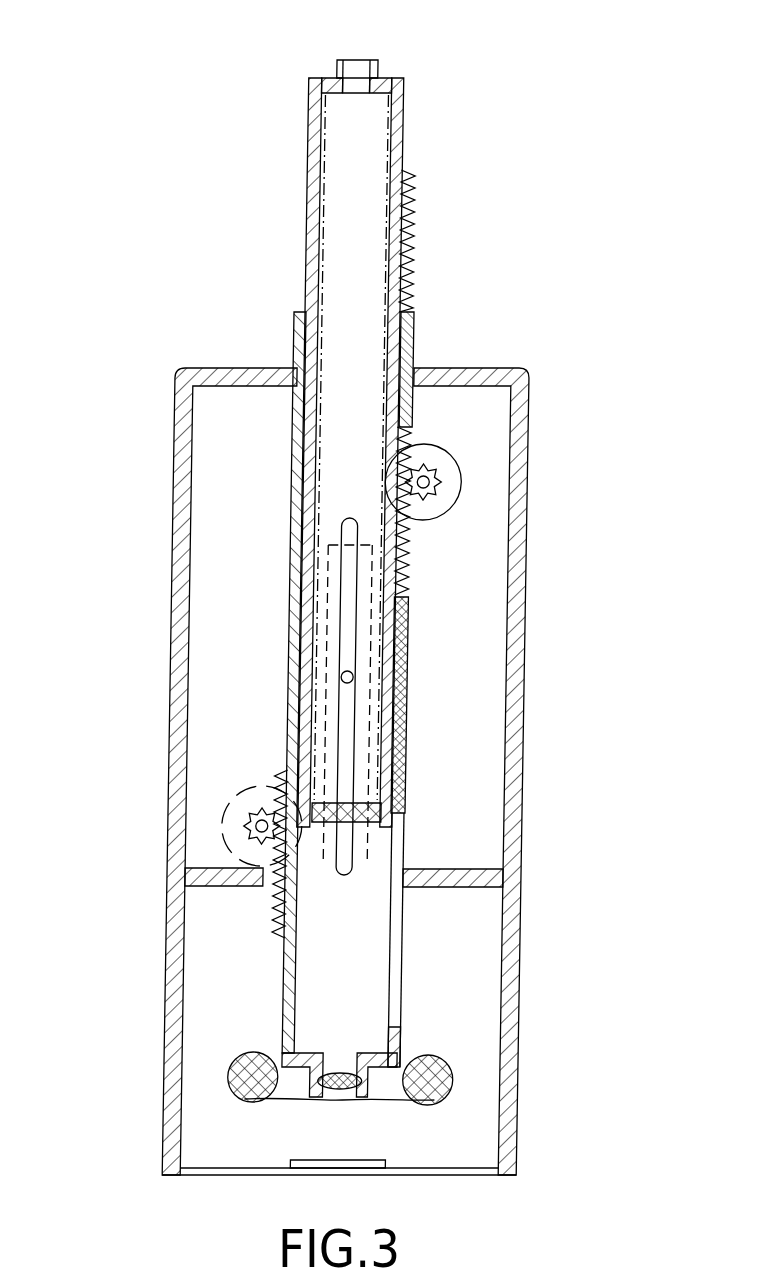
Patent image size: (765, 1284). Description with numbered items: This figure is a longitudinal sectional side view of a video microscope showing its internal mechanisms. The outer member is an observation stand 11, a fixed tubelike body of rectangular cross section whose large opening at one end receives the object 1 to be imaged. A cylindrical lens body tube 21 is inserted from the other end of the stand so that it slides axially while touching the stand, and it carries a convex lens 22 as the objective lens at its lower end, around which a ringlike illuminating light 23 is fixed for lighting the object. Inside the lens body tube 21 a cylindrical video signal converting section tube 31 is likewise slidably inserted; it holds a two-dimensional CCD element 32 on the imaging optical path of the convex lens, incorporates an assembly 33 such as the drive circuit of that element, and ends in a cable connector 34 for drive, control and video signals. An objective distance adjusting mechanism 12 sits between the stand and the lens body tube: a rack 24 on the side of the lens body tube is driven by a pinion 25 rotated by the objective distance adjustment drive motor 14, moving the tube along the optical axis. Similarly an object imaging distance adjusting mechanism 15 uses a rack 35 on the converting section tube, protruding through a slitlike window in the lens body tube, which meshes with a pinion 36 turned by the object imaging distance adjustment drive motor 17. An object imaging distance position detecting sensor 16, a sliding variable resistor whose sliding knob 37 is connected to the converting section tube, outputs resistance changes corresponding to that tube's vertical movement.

The object 1 is at (355, 1155).
The observation stand 11 is at (530, 890).
The objective distance adjusting mechanism 12 is at (272, 795).
The objective distance adjustment drive motor 14 is at (224, 806).
The object imaging distance adjusting mechanism 15 is at (416, 430).
The object imaging distance position detecting sensor 16 is at (322, 631).
The object imaging distance adjustment drive motor 17 is at (468, 469).
The lens body tube 21 is at (412, 990).
The convex lens 22 is at (337, 1083).
The ringlike illuminating light 23 is at (223, 1062).
The rack 24 is at (266, 915).
The pinion 25 is at (239, 827).
The video signal converting section tube 31 is at (306, 205).
The two-dimensional CCD element 32 is at (351, 803).
The assembly 33 is at (366, 161).
The cable connector 34 is at (334, 55).
The rack 35 is at (415, 552).
The pinion 36 is at (445, 495).
The sliding knob 37 is at (354, 677).